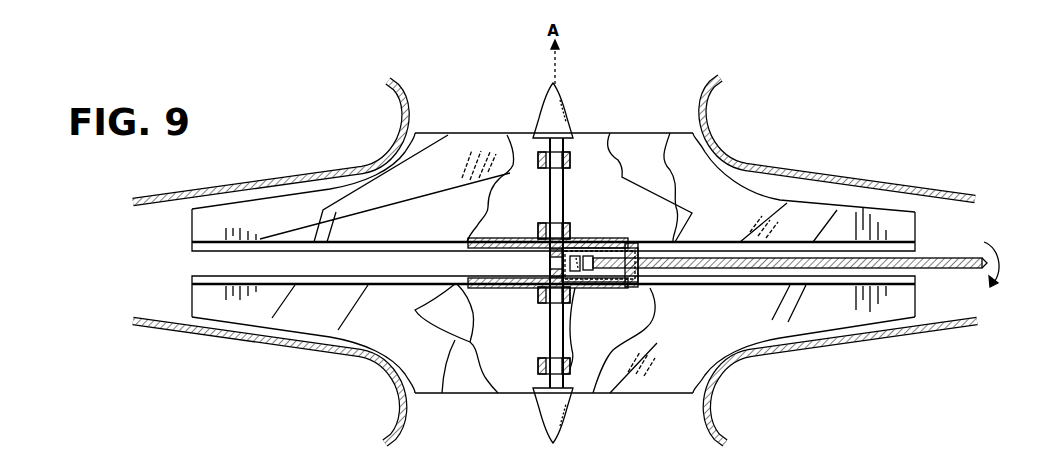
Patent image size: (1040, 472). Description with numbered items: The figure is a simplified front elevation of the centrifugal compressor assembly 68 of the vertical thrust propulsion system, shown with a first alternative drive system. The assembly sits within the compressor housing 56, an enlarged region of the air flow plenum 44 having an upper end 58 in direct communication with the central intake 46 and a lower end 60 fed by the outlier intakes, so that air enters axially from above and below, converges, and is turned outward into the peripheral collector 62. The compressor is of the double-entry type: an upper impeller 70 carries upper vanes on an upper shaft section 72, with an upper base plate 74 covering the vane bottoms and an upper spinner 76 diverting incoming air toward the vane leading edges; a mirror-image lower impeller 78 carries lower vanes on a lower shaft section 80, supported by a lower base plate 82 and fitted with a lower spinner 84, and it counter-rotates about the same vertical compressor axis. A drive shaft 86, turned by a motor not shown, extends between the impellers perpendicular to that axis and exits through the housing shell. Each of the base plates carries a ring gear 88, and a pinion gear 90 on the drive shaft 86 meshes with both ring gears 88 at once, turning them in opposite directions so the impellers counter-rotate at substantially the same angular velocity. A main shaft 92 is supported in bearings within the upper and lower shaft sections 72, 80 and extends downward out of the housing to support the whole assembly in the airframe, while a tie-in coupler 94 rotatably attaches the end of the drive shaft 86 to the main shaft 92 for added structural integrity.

The air flow plenum 44 is at (826, 180).
The central intake 46 is at (388, 79).
The compressor housing 56 is at (786, 358).
The upper end 58 is at (707, 120).
The lower end 60 is at (396, 415).
The peripheral collector 62 is at (152, 328).
The centrifugal compressor assembly 68 is at (470, 128).
The upper impeller 70 is at (670, 133).
The upper shaft section 72 is at (563, 178).
The upper base plate 74 is at (192, 246).
The upper spinner 76 is at (570, 112).
The lower impeller 78 is at (442, 393).
The lower shaft section 80 is at (548, 318).
The lower base plate 82 is at (192, 280).
The lower spinner 84 is at (538, 406).
The drive shaft 86 is at (943, 270).
The ring gear 88 is at (648, 240).
The pinion gear 90 is at (648, 287).
The main shaft 92 is at (550, 262).
The tie-in coupler 94 is at (570, 366).